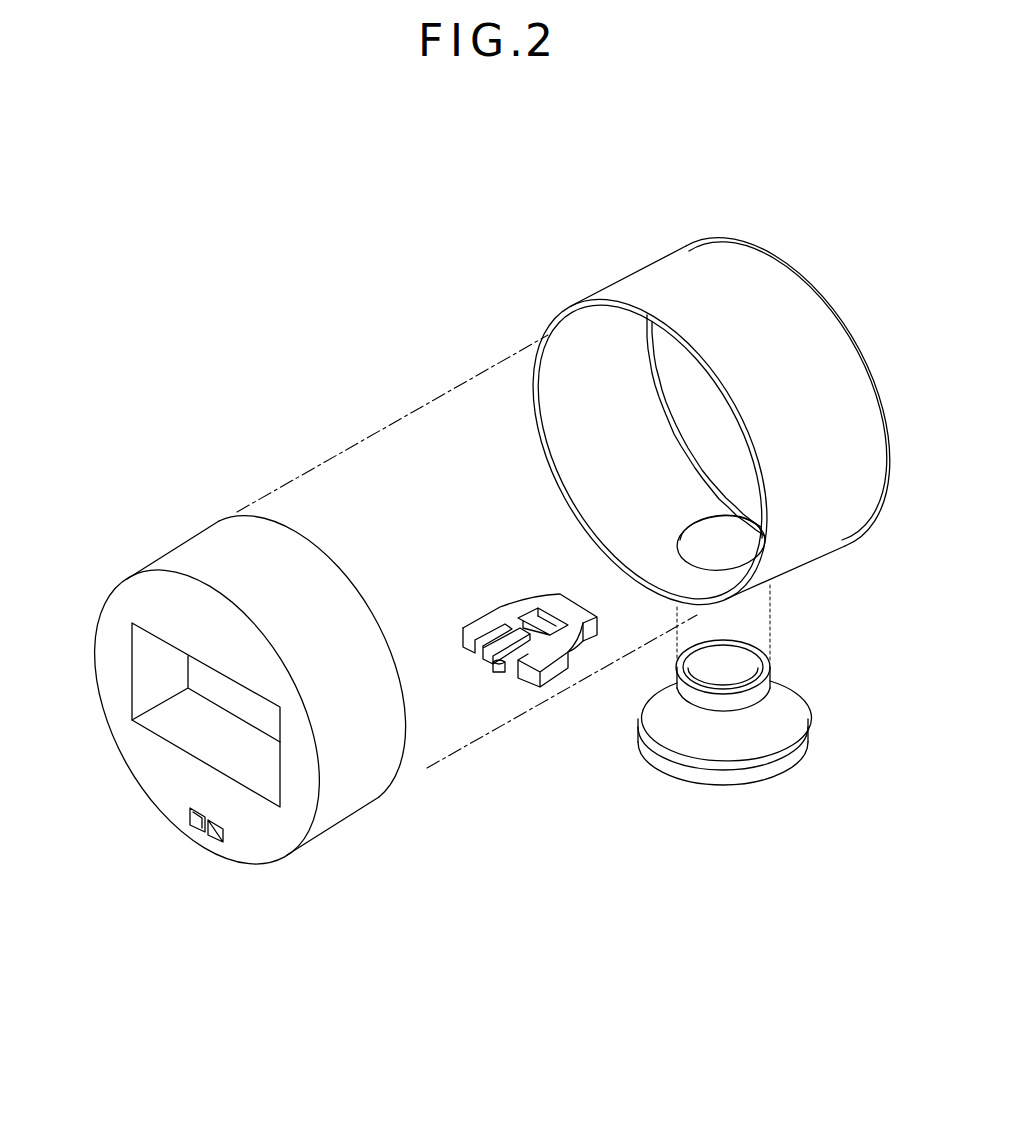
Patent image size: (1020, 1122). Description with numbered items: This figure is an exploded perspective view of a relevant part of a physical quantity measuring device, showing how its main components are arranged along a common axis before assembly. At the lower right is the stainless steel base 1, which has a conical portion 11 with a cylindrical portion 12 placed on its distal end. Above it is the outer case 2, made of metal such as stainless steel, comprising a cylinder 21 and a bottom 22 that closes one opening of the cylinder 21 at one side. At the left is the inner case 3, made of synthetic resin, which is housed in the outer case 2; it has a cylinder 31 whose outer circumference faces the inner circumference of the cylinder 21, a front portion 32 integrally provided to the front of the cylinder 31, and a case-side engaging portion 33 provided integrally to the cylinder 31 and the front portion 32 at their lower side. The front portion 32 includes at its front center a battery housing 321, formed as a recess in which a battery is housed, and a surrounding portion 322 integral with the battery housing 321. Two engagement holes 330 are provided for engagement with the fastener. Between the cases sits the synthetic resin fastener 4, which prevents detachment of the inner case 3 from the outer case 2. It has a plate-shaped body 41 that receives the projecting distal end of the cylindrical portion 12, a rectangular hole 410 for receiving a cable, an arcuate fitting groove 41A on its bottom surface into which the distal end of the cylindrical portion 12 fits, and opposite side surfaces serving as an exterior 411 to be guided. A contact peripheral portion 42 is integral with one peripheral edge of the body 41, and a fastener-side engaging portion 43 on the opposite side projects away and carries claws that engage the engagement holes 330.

The base 1 is at (763, 712).
The conical portion 11 is at (768, 737).
The cylindrical portion 12 is at (763, 690).
The outer case 2 is at (687, 404).
The cylinder 21 is at (737, 362).
The bottom 22 is at (720, 440).
The inner case 3 is at (227, 694).
The cylinder 31 is at (305, 572).
The front portion 32 is at (173, 746).
The battery housing 321 is at (190, 742).
The surrounding portion 322 is at (185, 793).
The case-side engaging portion 33 is at (180, 871).
The engagement holes 330 is at (210, 836).
The fastener 4 is at (516, 624).
The body 41 is at (516, 650).
The hole 410 is at (540, 610).
The fitting groove 41A is at (544, 626).
The exterior 411 is at (478, 615).
The contact peripheral portion 42 is at (572, 612).
The fastener-side engaging portion 43 is at (492, 670).